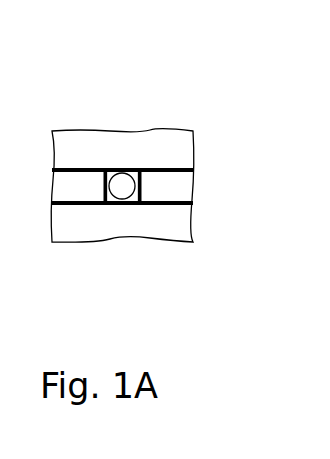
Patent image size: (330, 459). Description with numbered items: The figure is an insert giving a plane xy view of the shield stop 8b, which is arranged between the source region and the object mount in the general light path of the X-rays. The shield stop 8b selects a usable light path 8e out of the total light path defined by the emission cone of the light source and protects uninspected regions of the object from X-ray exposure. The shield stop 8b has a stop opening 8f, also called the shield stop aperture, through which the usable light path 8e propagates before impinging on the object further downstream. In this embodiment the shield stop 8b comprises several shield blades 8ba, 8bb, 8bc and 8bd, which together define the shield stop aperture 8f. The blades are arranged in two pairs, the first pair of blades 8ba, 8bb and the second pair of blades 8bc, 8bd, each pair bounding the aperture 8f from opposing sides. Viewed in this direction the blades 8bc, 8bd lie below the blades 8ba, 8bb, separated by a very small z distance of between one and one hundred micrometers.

The shield stop 8b is at (70, 114).
The shield blade 8ba is at (175, 143).
The shield blade 8bb is at (83, 192).
The shield blade 8bc is at (187, 190).
The shield blade 8bd is at (172, 232).
The usable light path 8e is at (135, 169).
The stop opening 8f is at (111, 202).